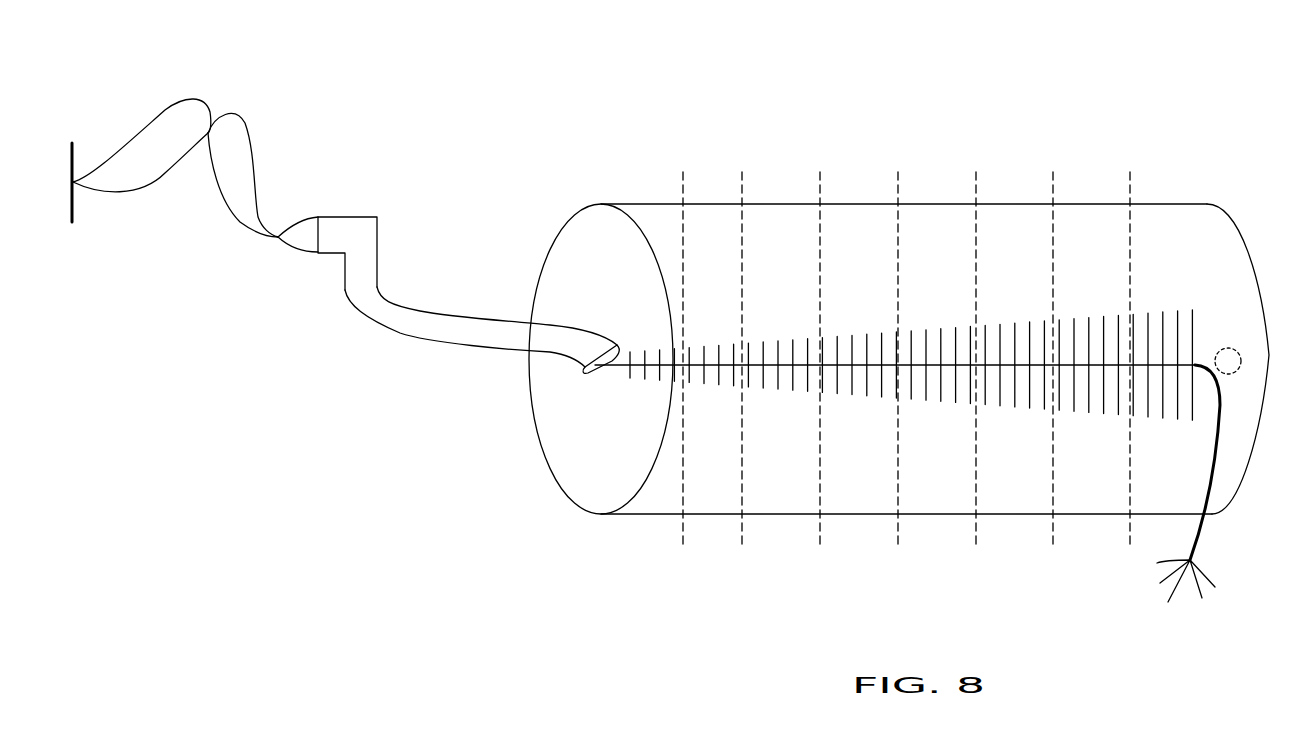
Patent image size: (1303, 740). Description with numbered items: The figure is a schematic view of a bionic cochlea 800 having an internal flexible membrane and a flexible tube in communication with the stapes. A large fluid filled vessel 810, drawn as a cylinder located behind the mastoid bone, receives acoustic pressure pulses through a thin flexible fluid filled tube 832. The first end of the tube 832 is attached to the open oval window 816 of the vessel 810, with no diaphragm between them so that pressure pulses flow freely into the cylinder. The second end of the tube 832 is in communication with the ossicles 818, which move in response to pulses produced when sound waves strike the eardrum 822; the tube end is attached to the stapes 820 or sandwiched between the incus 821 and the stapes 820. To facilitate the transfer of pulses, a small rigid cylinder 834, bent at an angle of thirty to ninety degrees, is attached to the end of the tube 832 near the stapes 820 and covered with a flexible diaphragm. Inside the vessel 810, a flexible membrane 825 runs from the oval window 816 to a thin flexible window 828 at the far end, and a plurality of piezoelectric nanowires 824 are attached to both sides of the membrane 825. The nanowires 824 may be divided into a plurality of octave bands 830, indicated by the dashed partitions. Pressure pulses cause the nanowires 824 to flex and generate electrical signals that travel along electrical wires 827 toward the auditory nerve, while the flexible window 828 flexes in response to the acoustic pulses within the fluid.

The bionic cochlea 800 is at (457, 89).
The fluid filled vessel 810 is at (624, 203).
The oval window 816 is at (600, 377).
The ossicles 818 is at (142, 128).
The stapes 820 is at (290, 247).
The incus 821 is at (253, 167).
The eardrum 822 is at (75, 205).
The piezoelectric nanowires 824 is at (856, 393).
The flexible membrane 825 is at (613, 368).
The electrical wires 827 is at (1168, 582).
The thin flexible window 828 is at (1228, 347).
The octave bands 830 is at (785, 187).
The thin flexible fluid filled tube 832 is at (407, 337).
The small rigid cylinder 834 is at (377, 240).